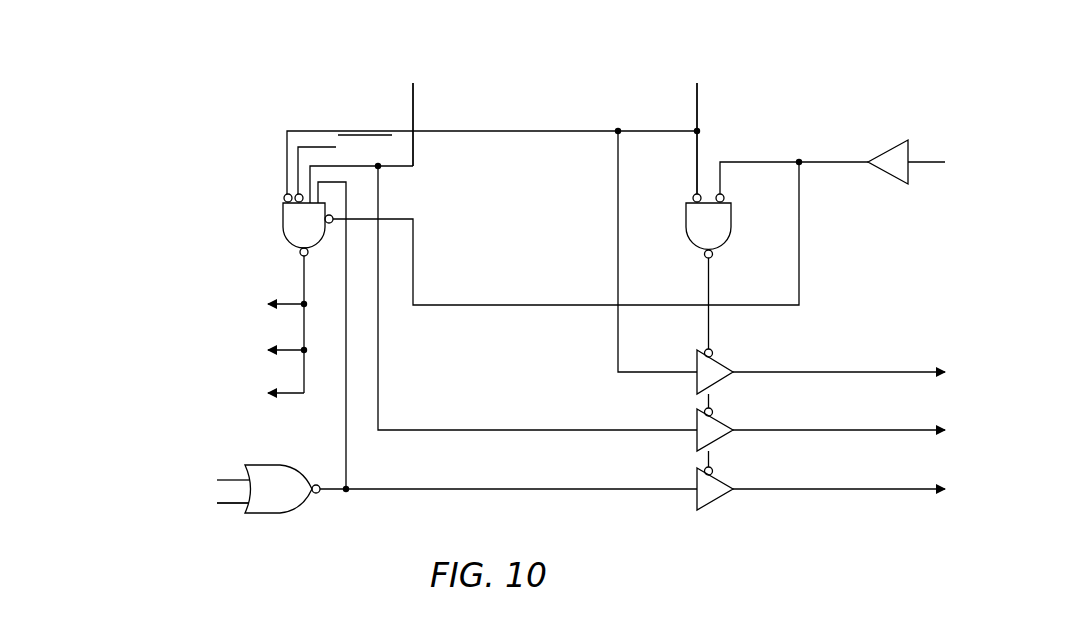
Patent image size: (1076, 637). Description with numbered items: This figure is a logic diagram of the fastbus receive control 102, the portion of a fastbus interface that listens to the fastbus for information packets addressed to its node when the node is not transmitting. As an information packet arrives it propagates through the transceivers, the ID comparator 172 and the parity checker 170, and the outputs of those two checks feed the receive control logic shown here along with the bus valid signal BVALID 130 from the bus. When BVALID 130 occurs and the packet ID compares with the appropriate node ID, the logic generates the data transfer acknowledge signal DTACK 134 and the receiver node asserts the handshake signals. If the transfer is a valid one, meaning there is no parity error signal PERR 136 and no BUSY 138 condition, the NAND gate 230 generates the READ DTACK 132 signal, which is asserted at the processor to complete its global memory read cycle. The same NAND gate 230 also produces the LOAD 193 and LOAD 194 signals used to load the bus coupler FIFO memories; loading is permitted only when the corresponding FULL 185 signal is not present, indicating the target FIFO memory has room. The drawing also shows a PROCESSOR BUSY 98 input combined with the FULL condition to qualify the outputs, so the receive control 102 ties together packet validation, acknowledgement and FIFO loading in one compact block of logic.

The receive control 102 is at (210, 138).
The NAND gate 230 is at (283, 233).
The parity checker 170 is at (457, 102).
The ID comparator 172 is at (761, 117).
The bus valid signal 130 is at (1018, 150).
The READ DTACK signal 132 is at (222, 292).
The LOAD signal 194 is at (239, 348).
The LOAD signal 193 is at (237, 391).
The PROCESSOR BUSY signal 98 is at (131, 476).
The FULL signal 185 is at (166, 500).
The data transfer acknowledge signal 134 is at (1015, 358).
The parity error signal 136 is at (1005, 422).
The BUSY signal 138 is at (1002, 480).